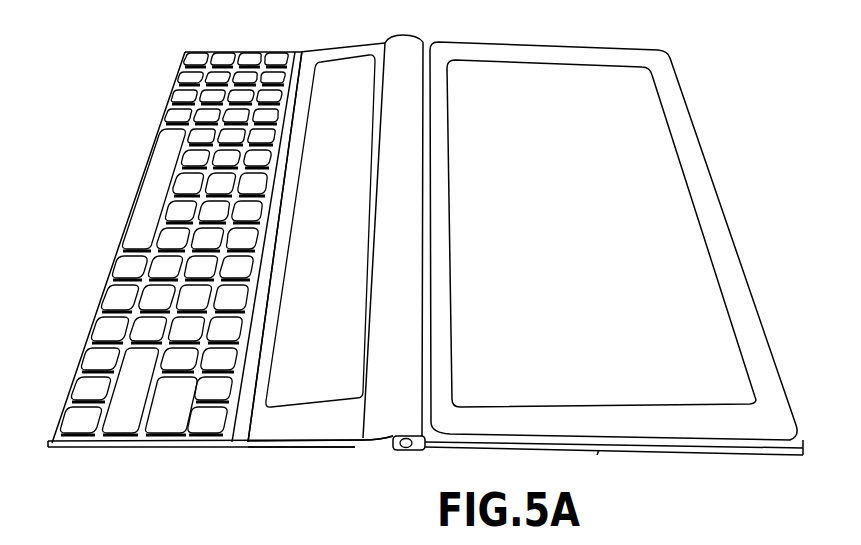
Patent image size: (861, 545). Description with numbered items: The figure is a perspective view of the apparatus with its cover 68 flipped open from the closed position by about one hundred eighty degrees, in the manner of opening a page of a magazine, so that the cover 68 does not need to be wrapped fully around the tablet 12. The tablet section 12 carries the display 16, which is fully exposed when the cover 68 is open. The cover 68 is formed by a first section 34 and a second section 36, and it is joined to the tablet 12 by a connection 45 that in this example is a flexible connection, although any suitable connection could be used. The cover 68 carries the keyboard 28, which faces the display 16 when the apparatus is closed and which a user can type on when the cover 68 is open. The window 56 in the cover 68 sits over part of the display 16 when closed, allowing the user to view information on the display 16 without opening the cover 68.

The first section 12 is at (661, 455).
The display 16 is at (675, 177).
The keyboard 28 is at (110, 428).
The first section of the cover 34 is at (312, 445).
The second section of the cover 36 is at (165, 432).
The connection 45 is at (380, 422).
The window 56 is at (282, 390).
The cover 68 is at (118, 246).